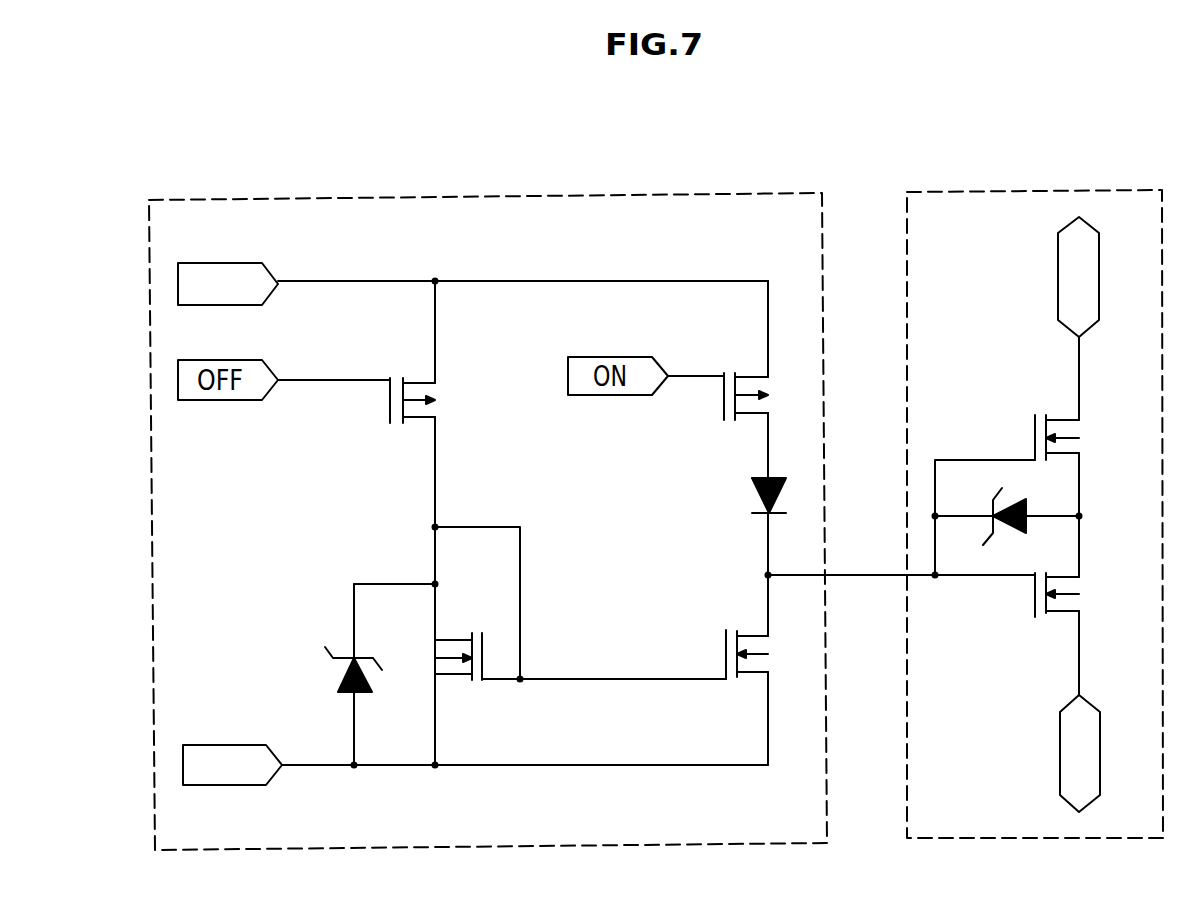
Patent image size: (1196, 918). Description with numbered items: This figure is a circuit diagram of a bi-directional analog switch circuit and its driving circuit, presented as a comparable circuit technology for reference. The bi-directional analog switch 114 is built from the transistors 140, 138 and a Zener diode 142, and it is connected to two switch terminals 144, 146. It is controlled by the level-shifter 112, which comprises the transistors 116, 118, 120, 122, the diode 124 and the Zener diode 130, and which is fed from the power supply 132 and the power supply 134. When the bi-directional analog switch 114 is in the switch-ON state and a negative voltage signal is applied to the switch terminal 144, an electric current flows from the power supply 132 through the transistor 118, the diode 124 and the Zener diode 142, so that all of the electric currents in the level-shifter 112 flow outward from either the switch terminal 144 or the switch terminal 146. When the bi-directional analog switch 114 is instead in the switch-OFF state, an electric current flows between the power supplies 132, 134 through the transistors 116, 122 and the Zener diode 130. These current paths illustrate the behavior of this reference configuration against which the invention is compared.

The level-shifter 112 is at (614, 193).
The bi-directional analog switch 114 is at (1032, 192).
The transistor 116 is at (445, 408).
The transistor 118 is at (732, 368).
The transistor 120 is at (727, 625).
The transistor 122 is at (472, 688).
The diode 124 is at (750, 495).
The Zener diode 130 is at (343, 673).
The power supply 132 is at (236, 262).
The power supply 134 is at (240, 743).
The transistor 138 is at (1043, 622).
The transistor 140 is at (1033, 412).
The Zener diode 142 is at (1007, 525).
The switch terminal 144 is at (1065, 772).
The switch terminal 146 is at (1058, 297).